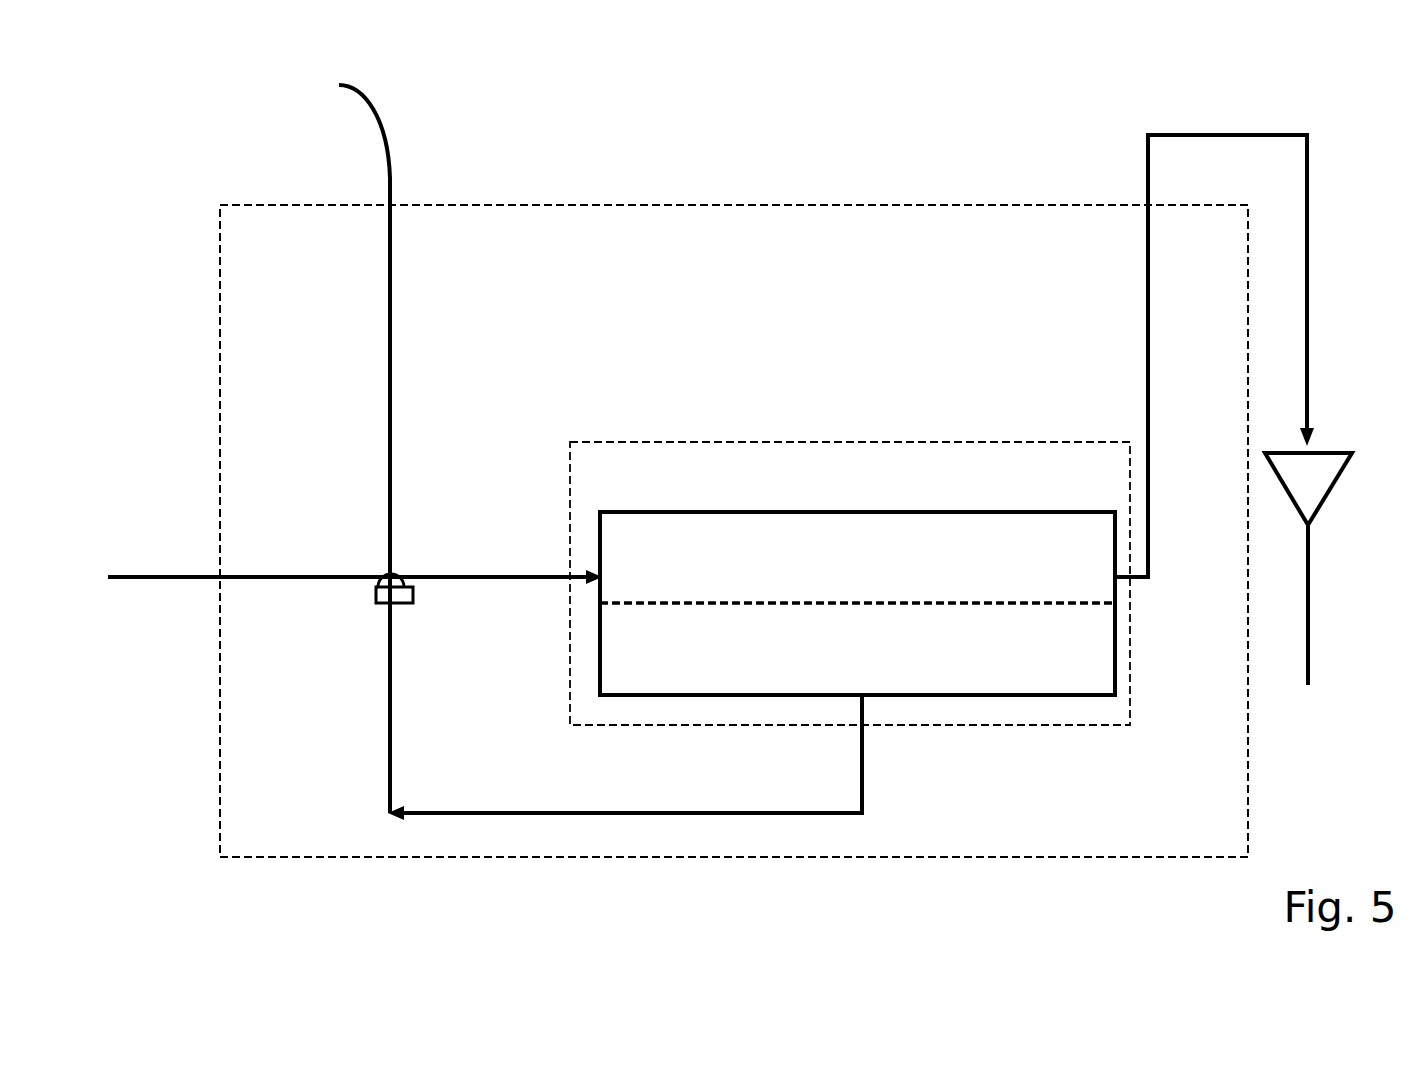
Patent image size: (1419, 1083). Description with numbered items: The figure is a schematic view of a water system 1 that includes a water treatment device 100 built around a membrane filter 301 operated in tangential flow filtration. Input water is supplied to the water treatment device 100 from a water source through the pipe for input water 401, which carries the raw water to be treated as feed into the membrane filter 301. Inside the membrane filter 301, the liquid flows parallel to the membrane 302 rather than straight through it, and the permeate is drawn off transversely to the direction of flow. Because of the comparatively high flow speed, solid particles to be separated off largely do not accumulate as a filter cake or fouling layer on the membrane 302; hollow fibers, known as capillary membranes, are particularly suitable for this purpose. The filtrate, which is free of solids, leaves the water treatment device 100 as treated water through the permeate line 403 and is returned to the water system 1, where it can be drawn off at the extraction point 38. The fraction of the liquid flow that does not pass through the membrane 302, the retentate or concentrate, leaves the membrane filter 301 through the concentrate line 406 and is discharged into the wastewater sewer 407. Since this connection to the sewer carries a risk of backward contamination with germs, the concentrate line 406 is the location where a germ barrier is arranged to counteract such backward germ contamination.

The water system 1 is at (220, 428).
The extraction point 38 is at (378, 111).
The pipe for input water 401 is at (163, 577).
The water treatment device 100 is at (687, 444).
The membrane filter 301 is at (808, 514).
The membrane 302 is at (942, 602).
The permeate line 403 is at (598, 810).
The concentrate line 406 is at (1267, 133).
The wastewater sewer 407 is at (1323, 512).